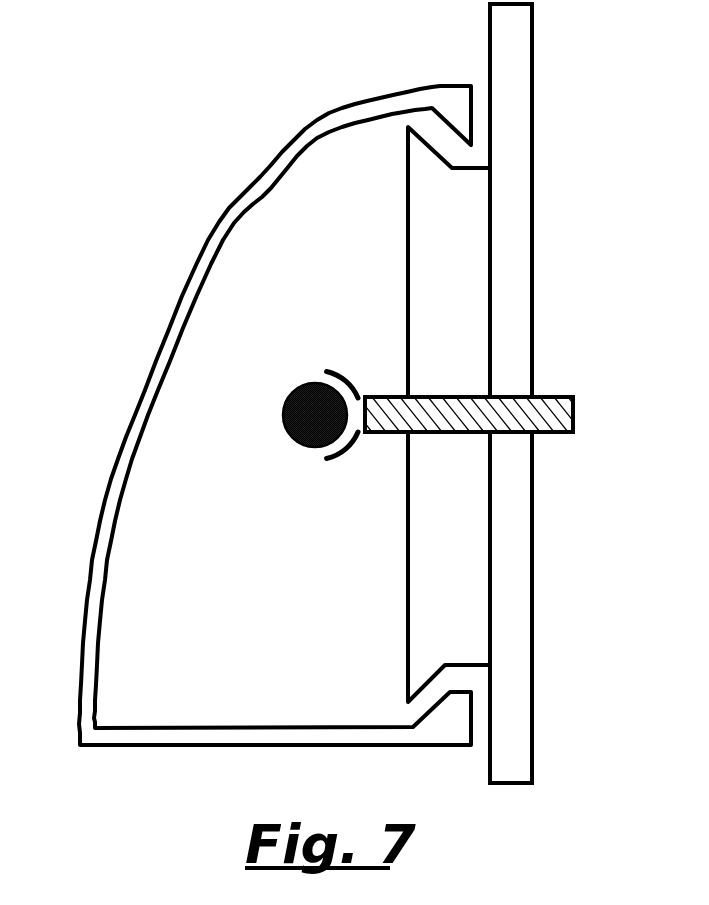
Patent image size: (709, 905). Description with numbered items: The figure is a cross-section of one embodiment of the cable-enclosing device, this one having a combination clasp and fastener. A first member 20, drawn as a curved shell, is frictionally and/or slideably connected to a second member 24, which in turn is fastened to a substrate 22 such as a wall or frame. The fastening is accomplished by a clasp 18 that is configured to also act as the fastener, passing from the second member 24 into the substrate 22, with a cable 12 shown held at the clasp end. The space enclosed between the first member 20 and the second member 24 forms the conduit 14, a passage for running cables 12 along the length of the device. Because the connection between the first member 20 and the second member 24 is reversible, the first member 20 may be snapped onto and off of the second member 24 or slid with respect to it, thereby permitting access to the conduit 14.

The cable 12 is at (288, 401).
The conduit 14 is at (298, 578).
The clasp 18 is at (565, 397).
The first member 20 is at (195, 261).
The substrate 22 is at (510, 71).
The second member 24 is at (460, 283).